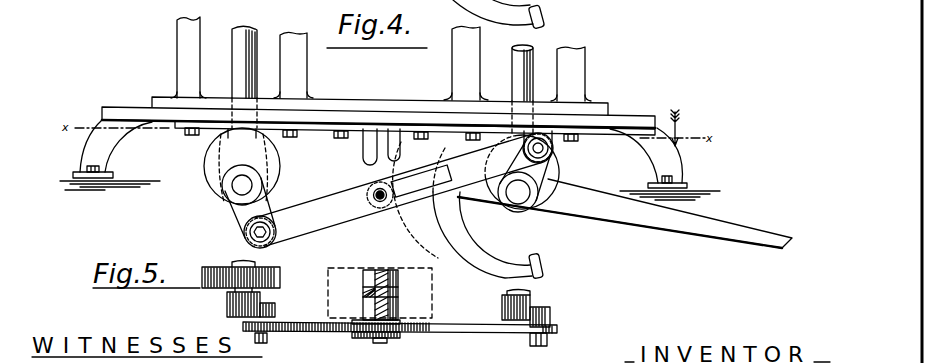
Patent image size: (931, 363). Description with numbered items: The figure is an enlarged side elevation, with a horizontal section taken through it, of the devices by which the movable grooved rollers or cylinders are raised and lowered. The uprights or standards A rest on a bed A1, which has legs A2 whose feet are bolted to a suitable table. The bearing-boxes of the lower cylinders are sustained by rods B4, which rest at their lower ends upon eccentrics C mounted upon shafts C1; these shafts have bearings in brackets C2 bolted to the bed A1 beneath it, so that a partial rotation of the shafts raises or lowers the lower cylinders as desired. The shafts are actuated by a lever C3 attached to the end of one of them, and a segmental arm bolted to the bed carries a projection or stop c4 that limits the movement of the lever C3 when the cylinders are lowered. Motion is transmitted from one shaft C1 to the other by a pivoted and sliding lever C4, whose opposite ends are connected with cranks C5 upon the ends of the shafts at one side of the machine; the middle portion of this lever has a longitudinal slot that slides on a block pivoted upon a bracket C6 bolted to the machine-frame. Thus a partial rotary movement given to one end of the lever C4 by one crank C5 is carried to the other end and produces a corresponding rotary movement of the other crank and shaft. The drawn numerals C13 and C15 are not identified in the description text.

In FIG. 4, the upright or standard A is at (183, 62).
In FIG. 4, the bed A1 is at (115, 106).
In FIG. 4, the leg A2 is at (116, 151).
In FIG. 4, the rod B4 is at (517, 70).
In FIG. 5, the rod B4 is at (233, 283).
In FIG. 4, the eccentric C is at (568, 172).
In FIG. 5, the eccentric C is at (230, 266).
In FIG. 4, the shaft C1 is at (517, 199).
In FIG. 5, the shaft C1 is at (507, 295).
In FIG. 4, the bracket C2 is at (585, 152).
In FIG. 4, the lever C3 is at (462, 210).
In FIG. 4, the pivoted and sliding lever C4 is at (404, 189).
In FIG. 5, the pivoted and sliding lever C4 is at (321, 331).
In FIG. 4, the crank C5 is at (262, 204).
In FIG. 5, the crank C5 is at (262, 300).
In FIG. 4, the bracket C6 is at (362, 162).
In FIG. 5, the bracket C6 is at (399, 290).
In FIG. 4, the lever arm C13 is at (625, 213).
In FIG. 4, the connecting link C15 is at (539, 212).
In FIG. 4, the projection or stop c4 is at (542, 265).